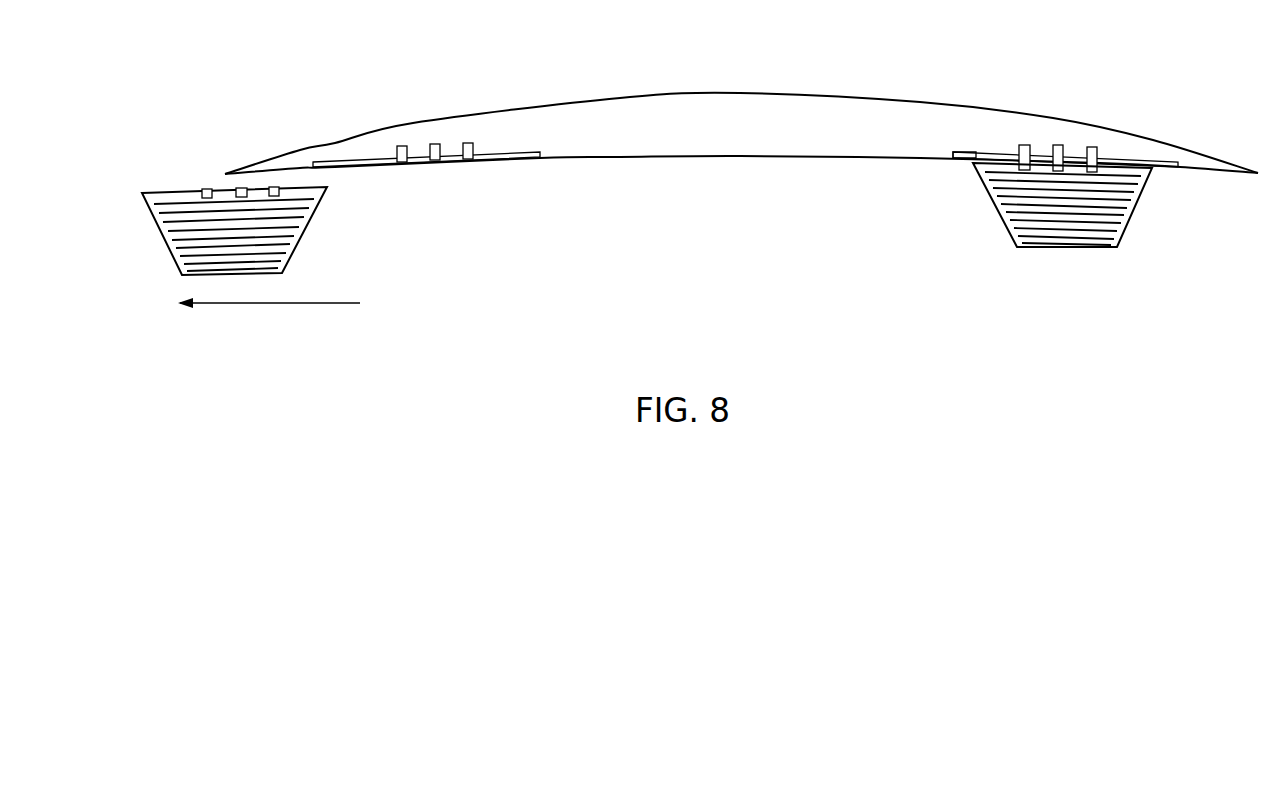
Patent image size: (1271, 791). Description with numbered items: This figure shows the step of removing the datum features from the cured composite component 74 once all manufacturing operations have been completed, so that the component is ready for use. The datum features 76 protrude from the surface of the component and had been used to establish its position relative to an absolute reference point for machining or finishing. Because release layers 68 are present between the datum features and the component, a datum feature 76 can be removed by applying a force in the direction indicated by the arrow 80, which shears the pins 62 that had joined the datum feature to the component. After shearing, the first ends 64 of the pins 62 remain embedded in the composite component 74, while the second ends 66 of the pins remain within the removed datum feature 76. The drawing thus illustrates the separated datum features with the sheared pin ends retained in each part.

The pins 62 is at (400, 145).
The first ends of the pins 64 is at (438, 155).
The second ends of the pins 66 is at (203, 190).
The release layers 68 is at (962, 152).
The composite component 74 is at (781, 192).
The datum features 76 is at (180, 242).
The arrow 80 is at (287, 305).